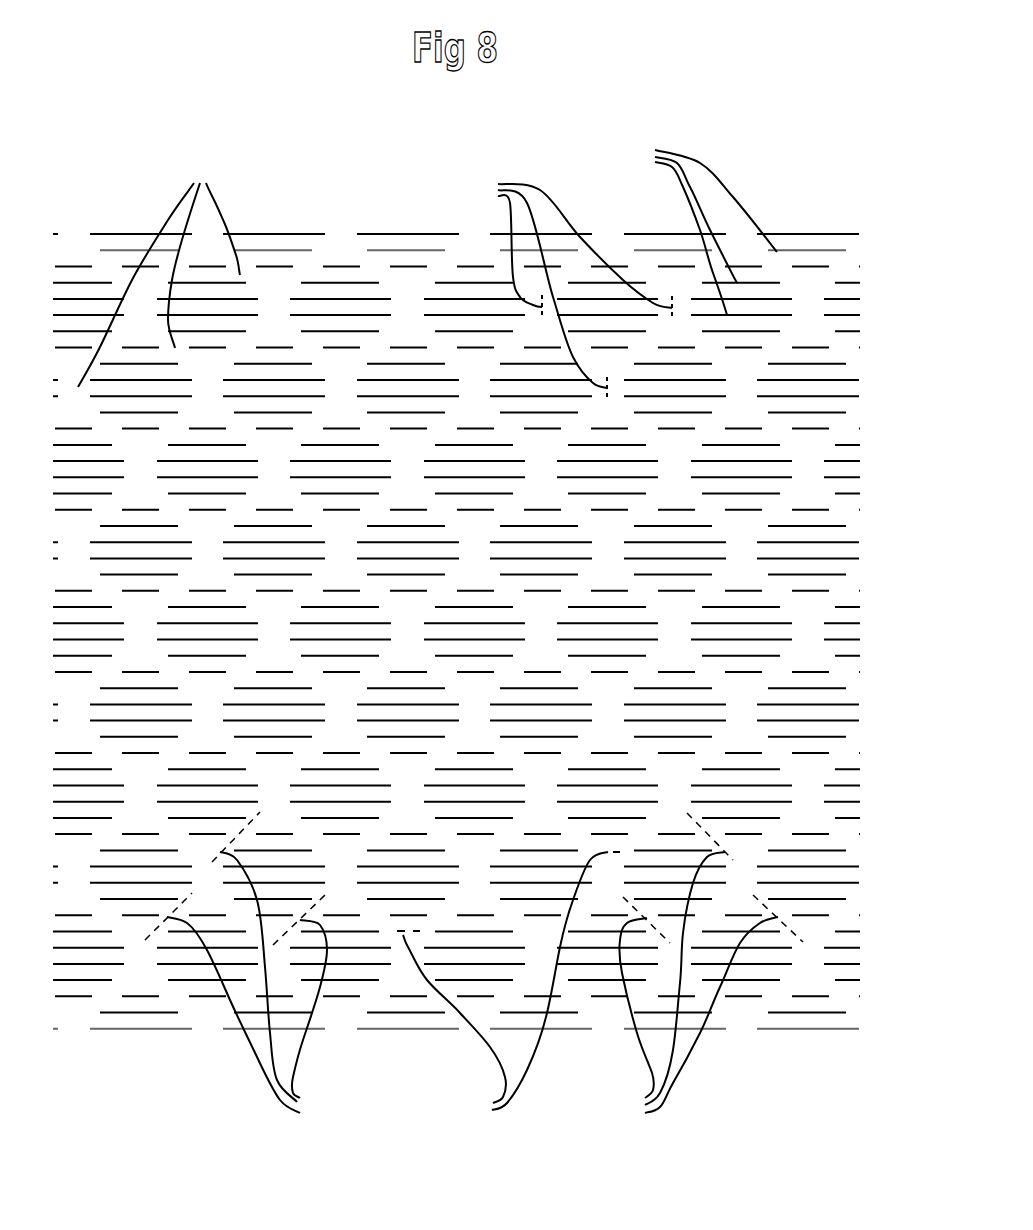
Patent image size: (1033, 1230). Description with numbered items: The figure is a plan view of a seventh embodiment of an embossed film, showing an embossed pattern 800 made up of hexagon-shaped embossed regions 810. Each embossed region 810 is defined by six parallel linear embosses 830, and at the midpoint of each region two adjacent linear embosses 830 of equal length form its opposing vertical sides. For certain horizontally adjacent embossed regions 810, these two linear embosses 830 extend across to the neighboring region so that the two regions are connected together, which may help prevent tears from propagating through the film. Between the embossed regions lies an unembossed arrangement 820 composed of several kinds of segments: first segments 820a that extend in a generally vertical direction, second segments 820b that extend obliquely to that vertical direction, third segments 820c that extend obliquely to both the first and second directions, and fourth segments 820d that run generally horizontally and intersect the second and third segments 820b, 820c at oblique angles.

The embossed pattern 800 is at (778, 142).
The embossed region 810 is at (393, 258).
The unembossed arrangement 820 is at (159, 273).
The first segment 820a is at (562, 289).
The second segment 820b is at (246, 964).
The third segment 820c is at (701, 965).
The fourth segment 820d is at (508, 984).
The linear emboss 830 is at (697, 230).